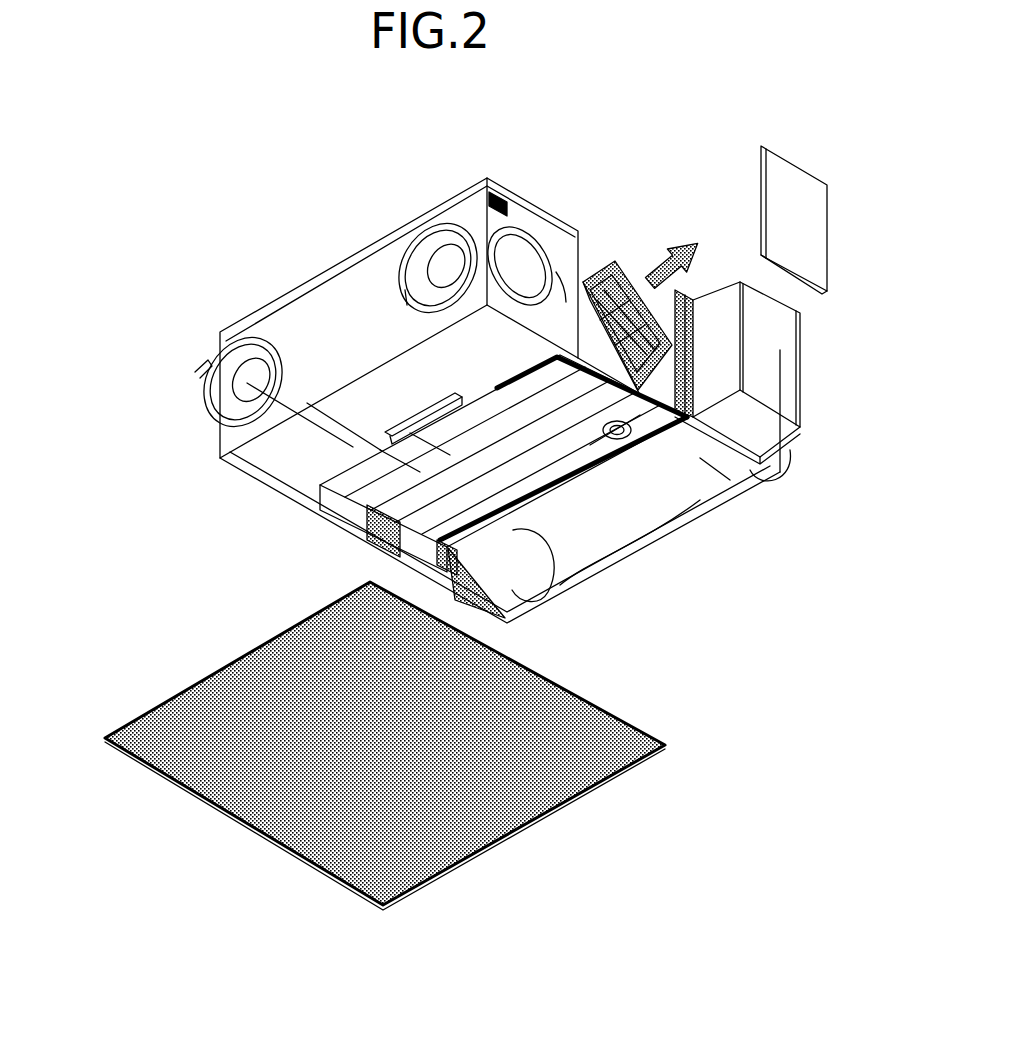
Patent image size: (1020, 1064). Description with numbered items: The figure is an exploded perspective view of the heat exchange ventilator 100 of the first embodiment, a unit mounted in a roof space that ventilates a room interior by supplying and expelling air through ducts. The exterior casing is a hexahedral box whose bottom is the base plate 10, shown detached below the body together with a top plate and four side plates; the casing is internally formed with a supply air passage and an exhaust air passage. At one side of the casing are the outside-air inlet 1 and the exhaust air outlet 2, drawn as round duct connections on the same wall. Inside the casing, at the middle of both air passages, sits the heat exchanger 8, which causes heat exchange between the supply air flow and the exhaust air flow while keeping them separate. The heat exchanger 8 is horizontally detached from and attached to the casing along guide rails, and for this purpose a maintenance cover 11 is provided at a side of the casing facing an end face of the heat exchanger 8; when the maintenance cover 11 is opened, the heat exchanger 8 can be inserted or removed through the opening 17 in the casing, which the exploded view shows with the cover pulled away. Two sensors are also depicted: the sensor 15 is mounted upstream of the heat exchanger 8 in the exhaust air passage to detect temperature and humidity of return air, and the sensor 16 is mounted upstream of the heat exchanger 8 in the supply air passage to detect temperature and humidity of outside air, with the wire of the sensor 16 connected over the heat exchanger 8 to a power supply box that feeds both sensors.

The heat exchange ventilator 100 is at (117, 530).
The outside-air inlet 1 is at (422, 243).
The exhaust air outlet 2 is at (222, 373).
The heat exchanger 8 is at (650, 299).
The base plate 10 is at (535, 828).
The maintenance cover 11 is at (795, 178).
The sensor 15 is at (613, 478).
The sensor 16 is at (524, 372).
The opening 17 is at (592, 252).